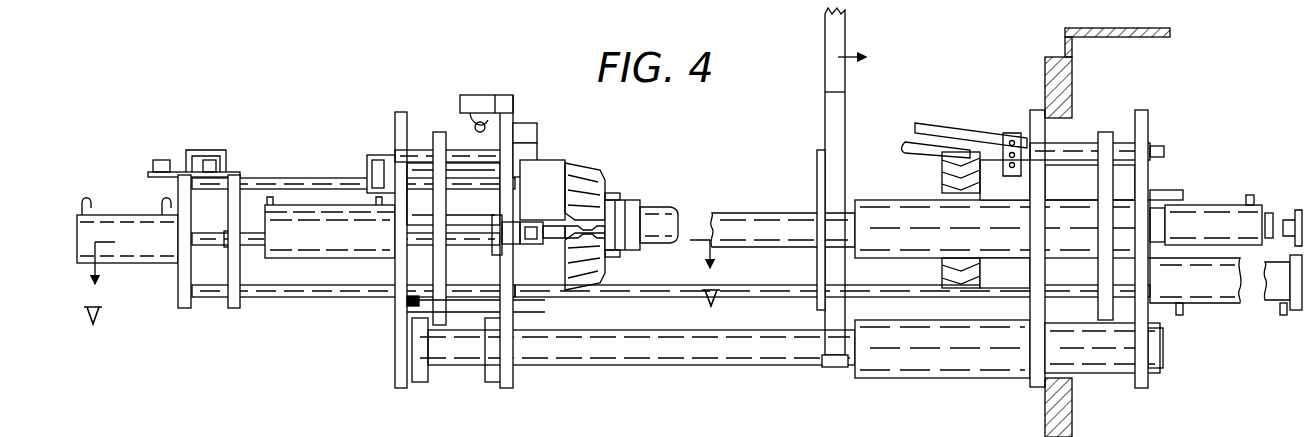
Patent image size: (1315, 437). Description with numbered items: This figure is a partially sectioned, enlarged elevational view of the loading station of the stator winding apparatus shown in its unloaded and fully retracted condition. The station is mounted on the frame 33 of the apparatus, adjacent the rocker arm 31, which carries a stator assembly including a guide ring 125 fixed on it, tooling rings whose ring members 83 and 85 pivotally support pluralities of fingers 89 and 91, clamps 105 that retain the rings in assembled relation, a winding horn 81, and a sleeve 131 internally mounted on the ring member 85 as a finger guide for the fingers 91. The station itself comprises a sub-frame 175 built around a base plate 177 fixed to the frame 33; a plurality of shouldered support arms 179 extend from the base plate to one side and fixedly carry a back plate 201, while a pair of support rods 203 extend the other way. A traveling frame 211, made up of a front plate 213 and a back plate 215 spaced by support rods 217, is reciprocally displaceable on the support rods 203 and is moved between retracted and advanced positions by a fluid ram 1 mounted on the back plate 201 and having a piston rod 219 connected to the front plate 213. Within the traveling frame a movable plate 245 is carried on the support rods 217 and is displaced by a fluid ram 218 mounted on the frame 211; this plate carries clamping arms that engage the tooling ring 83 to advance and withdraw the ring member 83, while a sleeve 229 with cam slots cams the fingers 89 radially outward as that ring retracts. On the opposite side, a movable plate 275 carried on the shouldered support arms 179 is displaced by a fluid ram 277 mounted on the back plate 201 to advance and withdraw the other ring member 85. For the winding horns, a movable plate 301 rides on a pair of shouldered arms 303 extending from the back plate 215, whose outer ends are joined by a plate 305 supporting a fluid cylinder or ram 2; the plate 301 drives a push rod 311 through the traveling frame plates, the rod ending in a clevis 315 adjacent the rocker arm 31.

The fluid ram 1 is at (1222, 300).
The fluid cylinder or ram 2 is at (138, 218).
The rocker arm 31 is at (845, 70).
The frame 33 is at (1045, 70).
The winding horn 81 is at (665, 208).
The ring member 83 is at (557, 162).
The ring member 85 is at (997, 270).
The fingers 89 is at (590, 168).
The fingers 91 is at (942, 170).
The clamps 105 is at (950, 128).
The guide ring 125 is at (817, 164).
The sleeve 131 is at (942, 268).
The sub-frame 175 is at (990, 362).
The base plate 177 is at (1022, 380).
The shouldered support arms 179 is at (1128, 150).
The back plate 201 is at (1148, 378).
The support rods 203 is at (670, 366).
The traveling frame 211 is at (393, 319).
The front plate 213 is at (513, 384).
The back plate 215 is at (401, 388).
The support rods 217 is at (418, 150).
The fluid ram 218 is at (345, 206).
The piston rod 219 is at (666, 291).
The sleeve 229 is at (647, 190).
The movable plate 245 is at (446, 196).
The movable plate 275 is at (1116, 112).
The fluid ram 277 is at (1222, 210).
The movable plate 301 is at (234, 309).
The shouldered arms 303 is at (316, 170).
The plate 305 is at (177, 271).
The push rod 311 is at (296, 244).
The clevis 315 is at (518, 226).